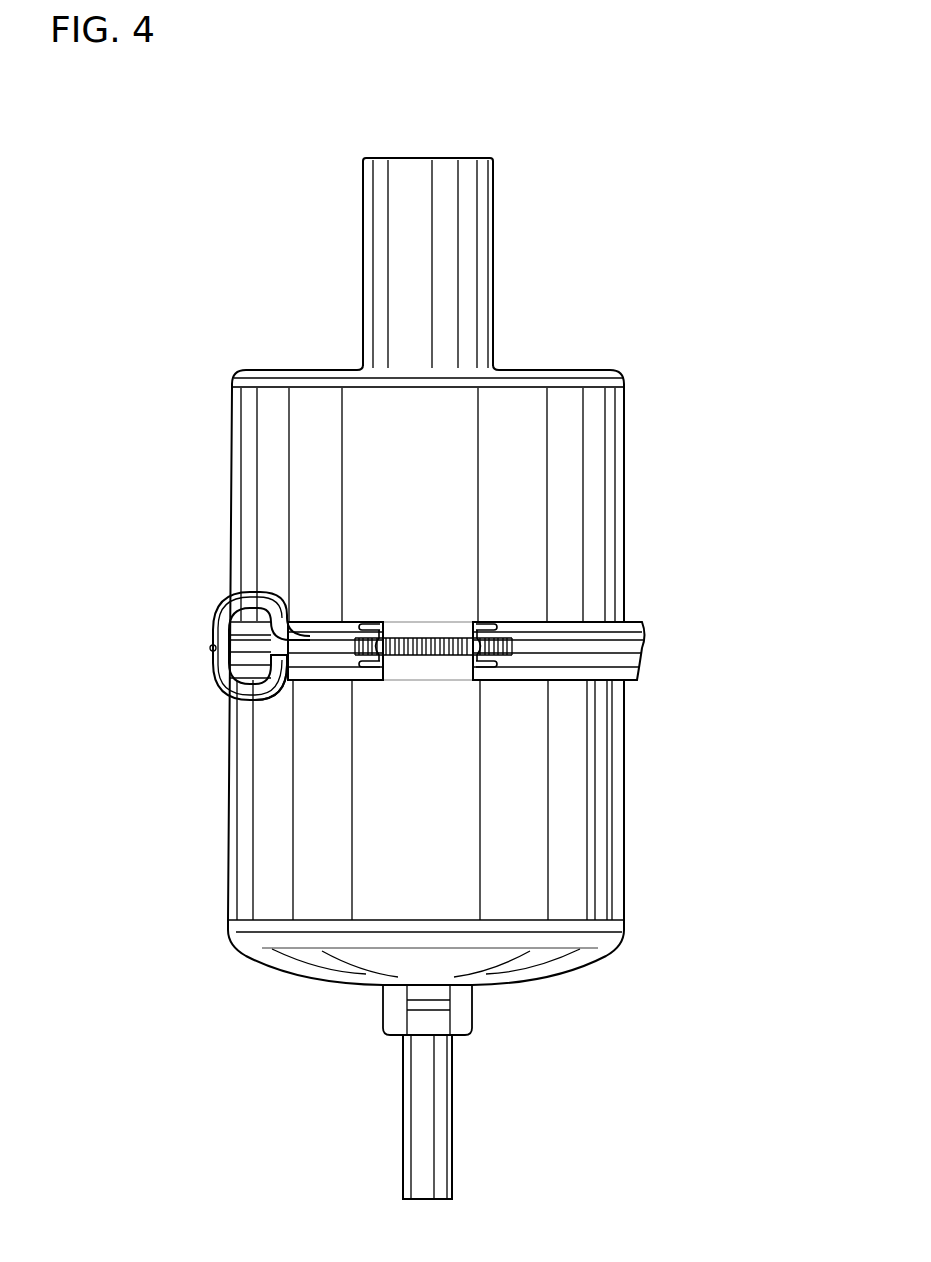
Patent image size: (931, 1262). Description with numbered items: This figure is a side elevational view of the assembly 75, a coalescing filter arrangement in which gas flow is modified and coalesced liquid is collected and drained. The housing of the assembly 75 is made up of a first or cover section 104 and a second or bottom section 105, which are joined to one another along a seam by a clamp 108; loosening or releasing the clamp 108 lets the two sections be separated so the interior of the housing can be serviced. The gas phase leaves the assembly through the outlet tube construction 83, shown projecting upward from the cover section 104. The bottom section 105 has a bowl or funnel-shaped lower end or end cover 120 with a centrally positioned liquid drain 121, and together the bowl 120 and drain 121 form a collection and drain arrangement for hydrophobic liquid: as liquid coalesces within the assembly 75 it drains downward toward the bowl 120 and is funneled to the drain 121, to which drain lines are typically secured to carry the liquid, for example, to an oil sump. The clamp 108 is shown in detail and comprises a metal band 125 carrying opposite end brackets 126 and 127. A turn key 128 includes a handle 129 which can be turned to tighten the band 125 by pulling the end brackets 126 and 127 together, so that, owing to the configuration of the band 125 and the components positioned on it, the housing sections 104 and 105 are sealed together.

The assembly 75 is at (555, 286).
The outlet tube construction 83 is at (494, 226).
The first or cover section 104 is at (580, 370).
The second or bottom section 105 is at (626, 794).
The clamp 108 is at (316, 700).
The bowl or funnel-shaped lower end or end cover 120 is at (562, 968).
The liquid drain 121 is at (452, 1085).
The metal band 125 is at (530, 625).
The end bracket 126 is at (372, 625).
The end bracket 127 is at (475, 625).
The turn key 128 is at (228, 608).
The handle 129 is at (228, 686).